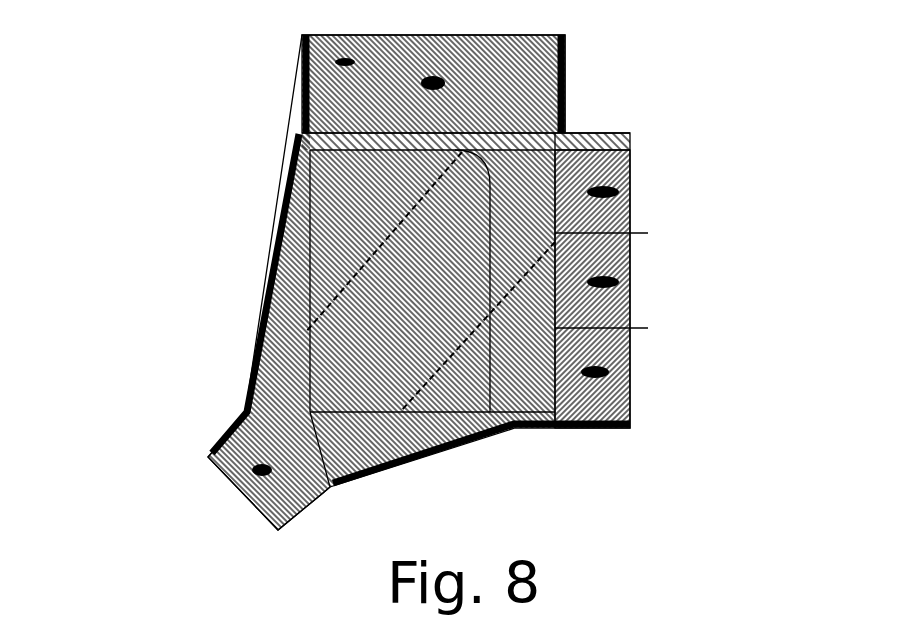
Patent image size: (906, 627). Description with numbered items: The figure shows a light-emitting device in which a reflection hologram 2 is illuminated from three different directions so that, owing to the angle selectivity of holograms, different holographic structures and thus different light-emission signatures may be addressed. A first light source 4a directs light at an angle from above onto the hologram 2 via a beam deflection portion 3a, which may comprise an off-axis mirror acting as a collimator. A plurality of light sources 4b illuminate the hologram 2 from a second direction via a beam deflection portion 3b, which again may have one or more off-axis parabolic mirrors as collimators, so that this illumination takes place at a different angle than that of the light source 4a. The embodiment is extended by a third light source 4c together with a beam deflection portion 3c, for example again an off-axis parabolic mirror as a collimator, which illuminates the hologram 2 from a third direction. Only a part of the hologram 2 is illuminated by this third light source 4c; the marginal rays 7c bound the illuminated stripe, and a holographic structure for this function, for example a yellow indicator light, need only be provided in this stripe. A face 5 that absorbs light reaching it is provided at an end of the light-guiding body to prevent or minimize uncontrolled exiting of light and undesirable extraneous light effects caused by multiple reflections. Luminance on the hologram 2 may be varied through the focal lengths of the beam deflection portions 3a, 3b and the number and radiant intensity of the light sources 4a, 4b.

The reflection hologram 2 is at (267, 300).
The beam deflection portion 3a is at (302, 40).
The light source 4a is at (304, 107).
The beam deflection portion 3b is at (636, 347).
The light sources 4b is at (634, 193).
The beam deflection portion 3c is at (208, 458).
The third light source 4c is at (326, 490).
The face 5 is at (277, 248).
The marginal rays 7c is at (520, 428).